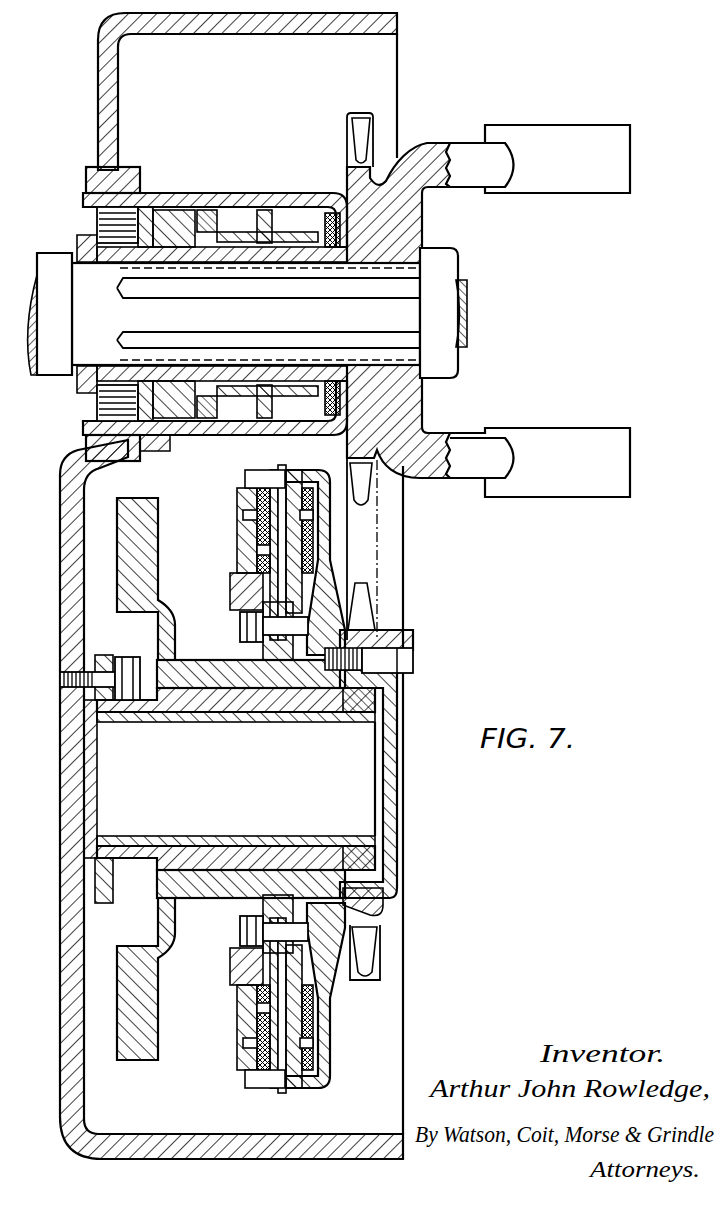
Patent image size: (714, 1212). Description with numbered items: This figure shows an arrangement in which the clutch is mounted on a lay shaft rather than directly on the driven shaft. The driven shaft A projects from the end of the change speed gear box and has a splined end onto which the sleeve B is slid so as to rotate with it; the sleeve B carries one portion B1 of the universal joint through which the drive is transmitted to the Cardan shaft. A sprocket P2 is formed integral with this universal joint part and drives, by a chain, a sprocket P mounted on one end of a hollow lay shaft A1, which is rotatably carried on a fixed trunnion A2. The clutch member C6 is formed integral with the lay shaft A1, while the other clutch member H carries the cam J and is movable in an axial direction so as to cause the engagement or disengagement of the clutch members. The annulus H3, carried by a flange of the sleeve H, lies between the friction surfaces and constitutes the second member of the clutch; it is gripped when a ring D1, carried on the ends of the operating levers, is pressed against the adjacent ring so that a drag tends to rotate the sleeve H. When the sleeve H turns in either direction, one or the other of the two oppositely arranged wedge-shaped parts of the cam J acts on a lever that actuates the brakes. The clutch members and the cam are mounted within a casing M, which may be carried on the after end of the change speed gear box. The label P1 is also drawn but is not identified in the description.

The driven shaft A is at (247, 313).
The hollow lay shaft A1 is at (377, 856).
The fixed trunnion A2 is at (315, 847).
The sleeve B is at (290, 378).
The portion of the universal joint B1 is at (537, 163).
The clutch member C6 is at (325, 550).
The ring D1 is at (250, 1042).
The sleeve H is at (188, 883).
The annulus H3 is at (315, 1003).
The cam J is at (143, 995).
The casing M is at (72, 1044).
The sprocket P is at (377, 630).
The toothed disc P1 is at (377, 577).
The sprocket P2 is at (357, 182).